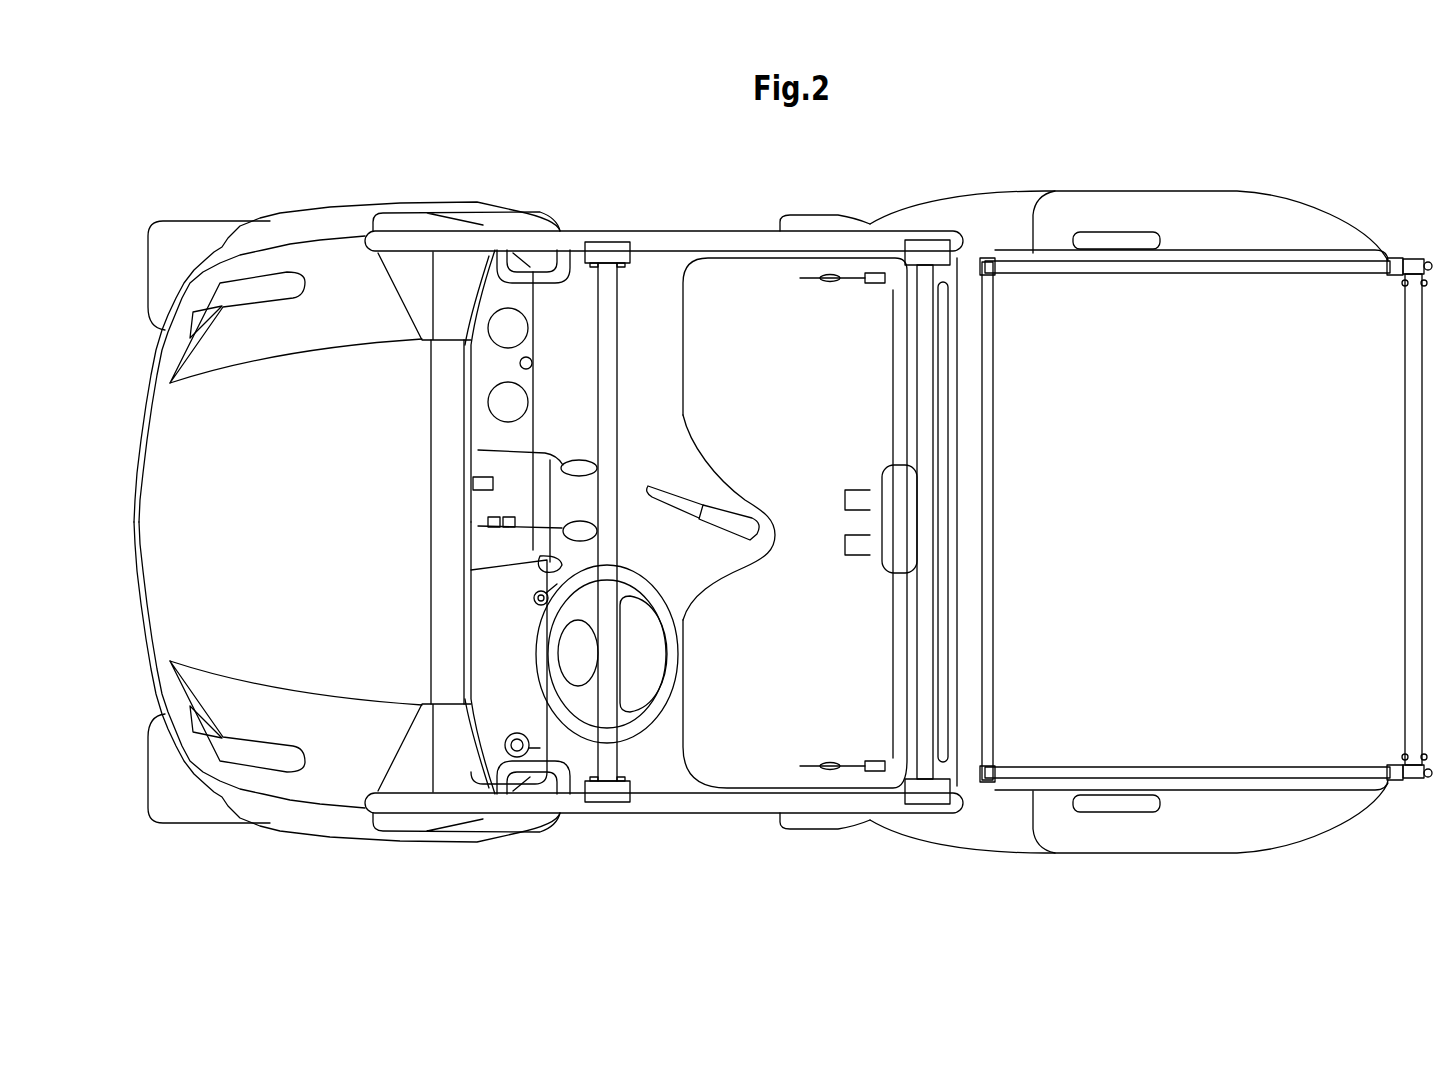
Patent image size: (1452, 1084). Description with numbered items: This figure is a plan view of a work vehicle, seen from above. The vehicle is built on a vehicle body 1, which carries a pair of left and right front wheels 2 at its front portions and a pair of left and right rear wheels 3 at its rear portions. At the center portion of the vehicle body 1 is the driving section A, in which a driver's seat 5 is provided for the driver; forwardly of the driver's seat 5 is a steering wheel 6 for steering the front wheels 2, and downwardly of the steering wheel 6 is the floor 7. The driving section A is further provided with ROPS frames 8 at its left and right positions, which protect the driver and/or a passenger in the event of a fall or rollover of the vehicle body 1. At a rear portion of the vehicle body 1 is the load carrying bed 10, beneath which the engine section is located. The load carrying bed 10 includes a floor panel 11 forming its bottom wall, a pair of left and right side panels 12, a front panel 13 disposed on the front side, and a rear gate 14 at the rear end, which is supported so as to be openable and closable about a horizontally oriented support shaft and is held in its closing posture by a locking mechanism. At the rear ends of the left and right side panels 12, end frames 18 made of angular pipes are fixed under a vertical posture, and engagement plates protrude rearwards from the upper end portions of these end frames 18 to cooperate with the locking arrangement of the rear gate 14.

The vehicle body 1 is at (518, 207).
The front wheels 2 is at (176, 242).
The rear wheels 3 is at (990, 213).
The driver's seat 5 is at (753, 760).
The steering wheel 6 is at (667, 653).
The floor 7 is at (653, 283).
The ROPS frames 8 is at (709, 240).
The load carrying bed 10 is at (1206, 258).
The floor panel 11 is at (1247, 715).
The side panels 12 is at (1158, 267).
The front panel 13 is at (988, 522).
The rear gate 14 is at (1402, 522).
The end frames 18 is at (1396, 258).
The driving section A is at (570, 396).